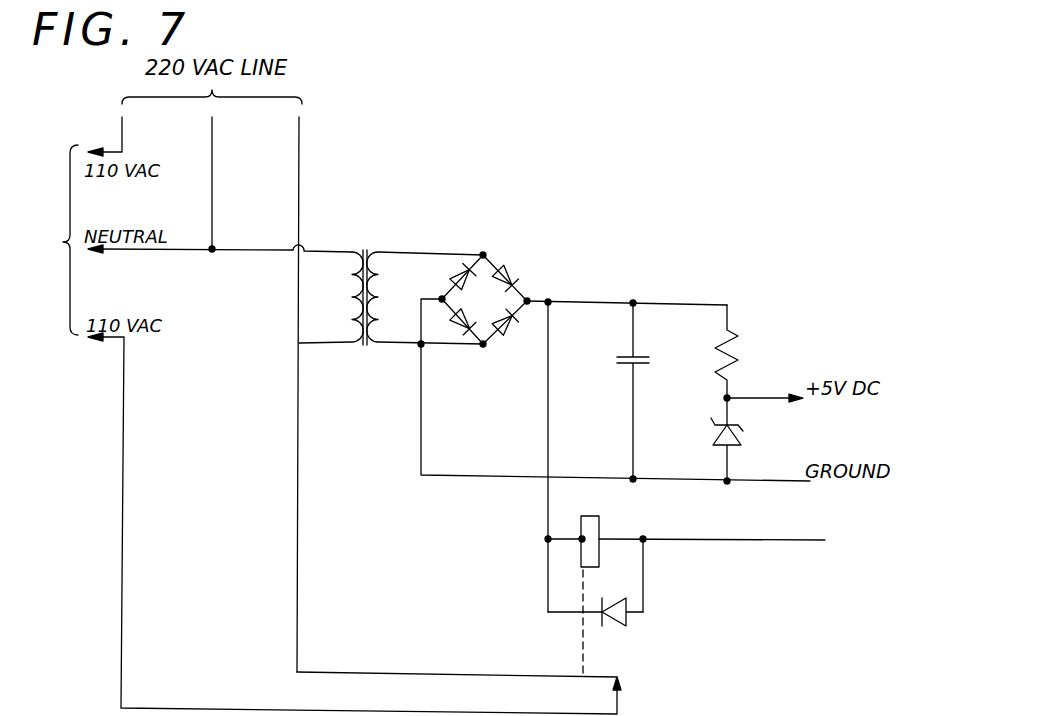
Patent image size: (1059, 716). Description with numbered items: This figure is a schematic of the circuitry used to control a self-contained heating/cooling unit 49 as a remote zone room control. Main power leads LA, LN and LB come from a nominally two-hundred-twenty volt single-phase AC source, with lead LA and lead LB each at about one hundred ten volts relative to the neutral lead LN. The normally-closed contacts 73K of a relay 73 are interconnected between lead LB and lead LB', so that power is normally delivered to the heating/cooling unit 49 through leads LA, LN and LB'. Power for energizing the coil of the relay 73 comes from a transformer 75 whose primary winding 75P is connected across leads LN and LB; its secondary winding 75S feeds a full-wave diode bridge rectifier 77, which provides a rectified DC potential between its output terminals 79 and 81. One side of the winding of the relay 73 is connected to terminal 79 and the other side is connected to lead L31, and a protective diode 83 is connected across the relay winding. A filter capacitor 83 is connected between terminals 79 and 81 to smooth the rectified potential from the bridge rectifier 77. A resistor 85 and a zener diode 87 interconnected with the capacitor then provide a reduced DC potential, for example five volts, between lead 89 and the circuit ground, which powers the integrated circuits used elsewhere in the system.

The heating/cooling unit 49 is at (59, 218).
The main power lead LA is at (124, 146).
The neutral lead LN is at (214, 187).
The main power lead LB is at (332, 394).
The power lead LB' is at (342, 523).
The transformer 75 is at (391, 268).
The primary winding 75P is at (352, 262).
The secondary winding 75S is at (386, 293).
The full-wave diode bridge rectifier 77 is at (492, 309).
The output terminal 79 is at (537, 301).
The output terminal 81 is at (505, 472).
The protective diode / filter capacitor 83 is at (641, 356).
The resistor 85 is at (738, 347).
The zener diode 87 is at (740, 441).
The lead 89 is at (775, 398).
The relay 73 is at (600, 530).
The normally-closed contacts 73K is at (618, 678).
The lead L31 is at (735, 541).